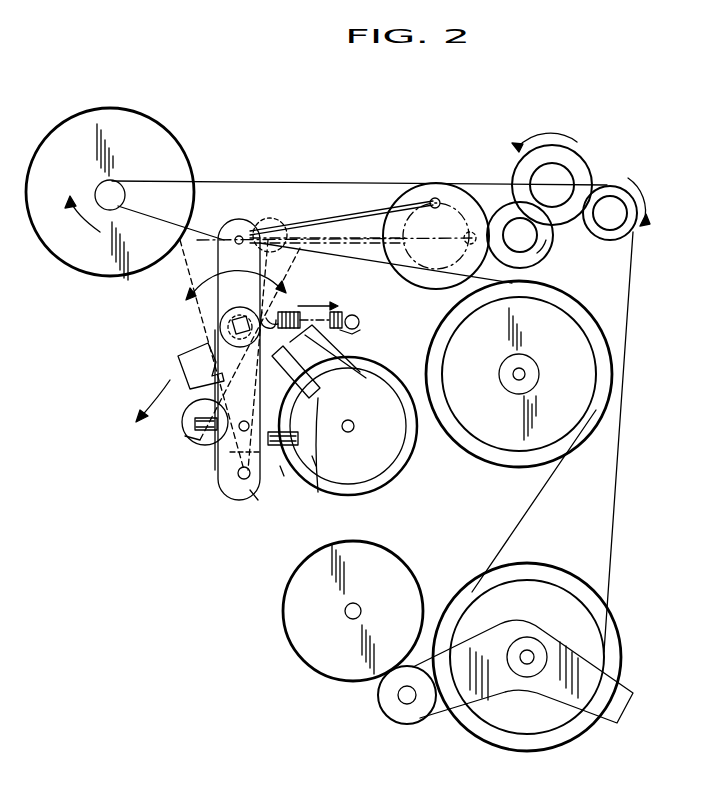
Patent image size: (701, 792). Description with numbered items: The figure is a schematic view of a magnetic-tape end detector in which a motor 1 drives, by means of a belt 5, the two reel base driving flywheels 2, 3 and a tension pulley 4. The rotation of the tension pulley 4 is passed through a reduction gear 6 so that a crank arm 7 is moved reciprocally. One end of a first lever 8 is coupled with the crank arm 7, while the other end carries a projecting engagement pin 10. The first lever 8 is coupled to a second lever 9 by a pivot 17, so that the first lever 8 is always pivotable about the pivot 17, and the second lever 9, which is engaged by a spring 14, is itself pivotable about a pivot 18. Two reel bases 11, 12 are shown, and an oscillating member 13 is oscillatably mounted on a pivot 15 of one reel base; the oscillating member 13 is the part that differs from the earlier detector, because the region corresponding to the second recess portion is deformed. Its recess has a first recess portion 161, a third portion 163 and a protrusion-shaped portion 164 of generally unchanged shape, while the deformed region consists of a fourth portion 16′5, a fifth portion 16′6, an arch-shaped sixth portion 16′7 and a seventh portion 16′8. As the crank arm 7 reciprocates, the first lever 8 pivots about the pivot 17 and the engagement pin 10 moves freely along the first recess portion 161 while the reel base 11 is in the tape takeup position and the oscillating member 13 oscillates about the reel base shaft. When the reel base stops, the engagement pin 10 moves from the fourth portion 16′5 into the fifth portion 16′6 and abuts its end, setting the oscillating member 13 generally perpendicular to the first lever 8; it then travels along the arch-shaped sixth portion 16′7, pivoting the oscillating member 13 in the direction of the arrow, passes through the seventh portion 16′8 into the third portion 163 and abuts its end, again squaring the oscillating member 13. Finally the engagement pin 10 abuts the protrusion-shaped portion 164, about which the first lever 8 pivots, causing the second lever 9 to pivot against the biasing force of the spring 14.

The motor 1 is at (193, 151).
The flywheel 2 is at (592, 418).
The flywheel 3 is at (592, 612).
The tension pulley 4 is at (640, 228).
The belt 5 is at (356, 181).
The reduction gear 6 is at (470, 181).
The crank arm 7 is at (331, 228).
The first lever 8 is at (238, 216).
The second lever 9 is at (182, 352).
The engagement pin 10 is at (224, 432).
The reel base 11 is at (398, 478).
The reel base 12 is at (412, 574).
The oscillating member 13 is at (360, 470).
The spring 14 is at (330, 314).
The pivot 15 is at (356, 430).
The first recess portion 161 is at (356, 330).
The third portion 163 is at (210, 325).
The protrusion-shaped portion 164 is at (356, 374).
The fourth portion 16′5 is at (254, 497).
The fifth portion 16′6 is at (197, 427).
The sixth portion 16′7 is at (282, 473).
The seventh portion 16′8 is at (314, 458).
The pivot 17 is at (272, 318).
The pivot 18 is at (240, 478).